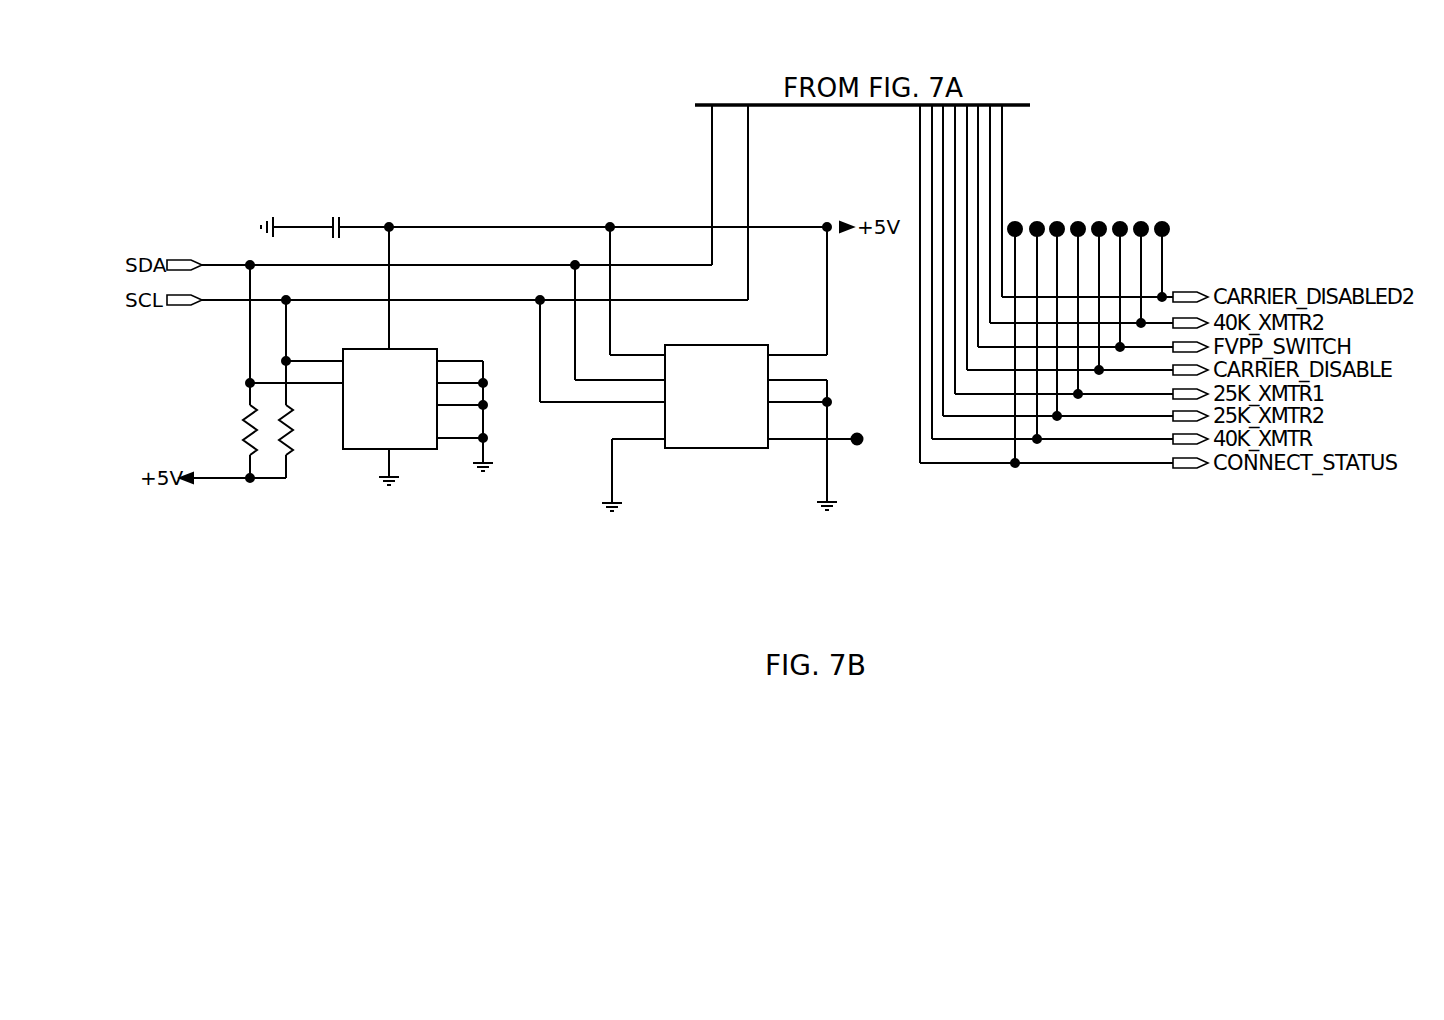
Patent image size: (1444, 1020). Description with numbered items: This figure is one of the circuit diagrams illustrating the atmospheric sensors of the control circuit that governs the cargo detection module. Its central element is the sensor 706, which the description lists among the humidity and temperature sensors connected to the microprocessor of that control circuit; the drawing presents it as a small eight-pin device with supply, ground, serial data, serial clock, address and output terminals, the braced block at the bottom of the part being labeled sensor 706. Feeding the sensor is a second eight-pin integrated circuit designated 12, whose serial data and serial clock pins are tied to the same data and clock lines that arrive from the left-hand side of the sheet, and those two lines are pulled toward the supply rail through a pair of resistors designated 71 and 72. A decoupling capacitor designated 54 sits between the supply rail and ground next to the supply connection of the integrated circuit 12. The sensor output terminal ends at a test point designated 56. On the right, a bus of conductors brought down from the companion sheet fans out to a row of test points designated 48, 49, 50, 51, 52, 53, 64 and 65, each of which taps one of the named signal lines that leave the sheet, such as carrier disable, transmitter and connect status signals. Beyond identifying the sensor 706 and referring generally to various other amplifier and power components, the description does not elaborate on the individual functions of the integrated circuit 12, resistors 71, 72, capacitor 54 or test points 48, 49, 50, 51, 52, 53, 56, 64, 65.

The humidity sensor 706 is at (813, 527).
The U12 integrated circuit 12 is at (410, 403).
The resistor R71 5.1k 71 is at (226, 428).
The resistor R72 5.1k 72 is at (306, 428).
The capacitor C54 .1uF 54 is at (319, 234).
The test point TP56 56 is at (843, 435).
The test point TP48 48 is at (1014, 321).
The test point TP49 49 is at (1036, 309).
The test point TP50 50 is at (1056, 297).
The test point TP51 51 is at (1077, 286).
The test point TP52 52 is at (1098, 274).
The test point TP53 53 is at (1119, 263).
The test point TP64 64 is at (1140, 251).
The test point TP65 65 is at (1161, 238).